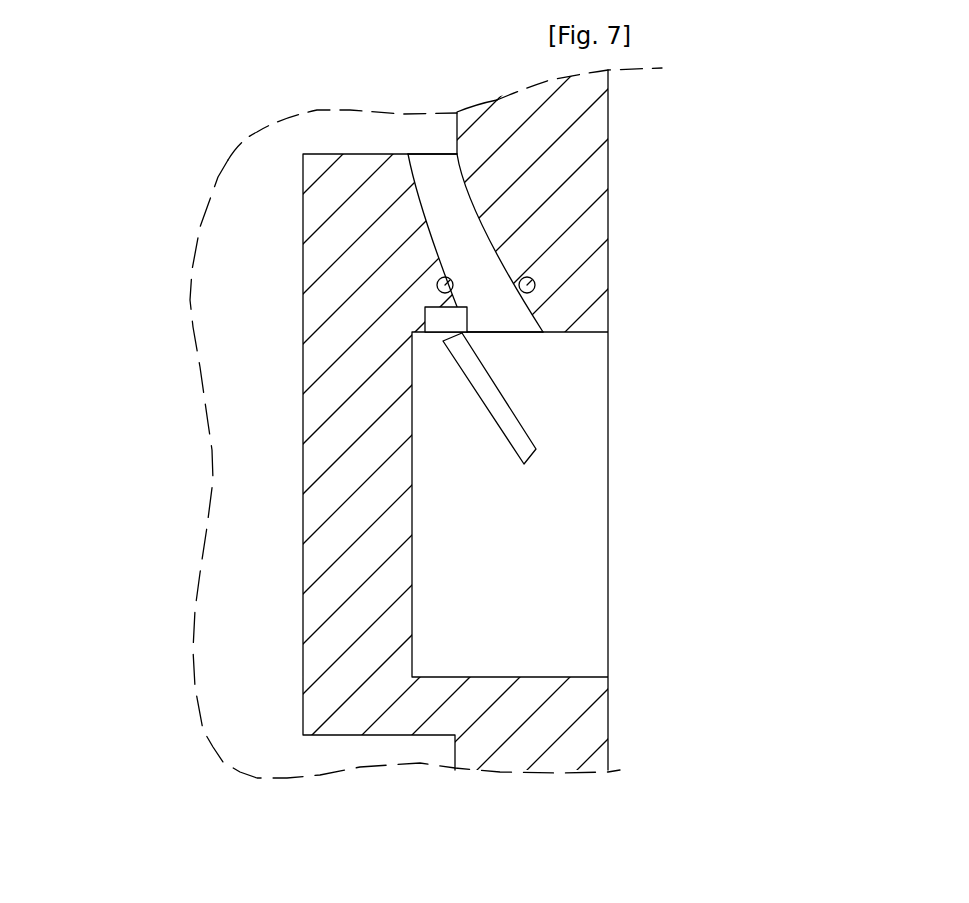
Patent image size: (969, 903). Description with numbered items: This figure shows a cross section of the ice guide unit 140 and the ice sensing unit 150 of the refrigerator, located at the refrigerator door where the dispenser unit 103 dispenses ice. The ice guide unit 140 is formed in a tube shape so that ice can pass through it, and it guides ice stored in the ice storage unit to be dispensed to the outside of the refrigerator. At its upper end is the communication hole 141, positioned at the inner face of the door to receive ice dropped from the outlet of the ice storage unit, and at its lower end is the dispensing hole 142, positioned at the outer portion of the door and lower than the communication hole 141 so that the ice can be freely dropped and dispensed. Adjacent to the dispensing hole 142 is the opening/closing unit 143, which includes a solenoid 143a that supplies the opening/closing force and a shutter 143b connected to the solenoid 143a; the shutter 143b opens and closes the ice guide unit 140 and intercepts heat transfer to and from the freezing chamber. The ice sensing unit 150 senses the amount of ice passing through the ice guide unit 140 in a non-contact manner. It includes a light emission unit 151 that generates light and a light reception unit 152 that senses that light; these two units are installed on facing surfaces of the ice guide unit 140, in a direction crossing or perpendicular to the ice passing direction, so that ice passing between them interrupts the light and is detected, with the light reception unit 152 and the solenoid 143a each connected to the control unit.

The dispenser unit 103 is at (547, 562).
The ice guide unit 140 is at (447, 230).
The communication hole 141 is at (433, 155).
The dispensing hole 142 is at (517, 335).
The opening/closing unit 143 is at (104, 435).
The solenoid 143a is at (443, 322).
The shutter 143b is at (522, 452).
The ice sensing unit 150 is at (707, 163).
The light emission unit 151 is at (447, 278).
The light reception unit 152 is at (533, 278).